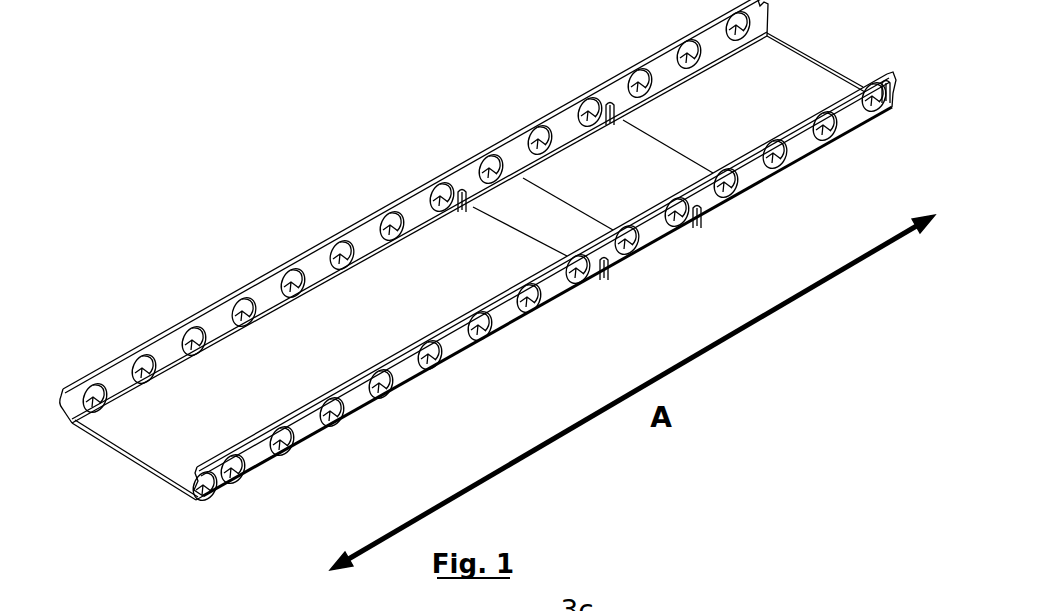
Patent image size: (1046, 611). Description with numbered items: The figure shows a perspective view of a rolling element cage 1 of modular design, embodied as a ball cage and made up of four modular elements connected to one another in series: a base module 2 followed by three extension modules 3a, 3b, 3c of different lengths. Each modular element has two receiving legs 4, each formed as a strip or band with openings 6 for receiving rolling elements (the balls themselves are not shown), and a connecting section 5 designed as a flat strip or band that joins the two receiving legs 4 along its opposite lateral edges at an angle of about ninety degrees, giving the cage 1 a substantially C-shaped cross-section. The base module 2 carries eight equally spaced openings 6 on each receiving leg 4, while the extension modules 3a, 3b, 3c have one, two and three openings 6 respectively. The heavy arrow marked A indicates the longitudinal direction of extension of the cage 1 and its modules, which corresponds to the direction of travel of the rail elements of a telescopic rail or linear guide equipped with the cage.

The rolling element cage 1 is at (480, 286).
The base module 2 is at (429, 388).
The extension module 3a is at (636, 272).
The extension module 3b is at (709, 225).
The extension module 3c is at (841, 161).
The receiving leg 4 is at (478, 286).
The connecting section 5 is at (323, 332).
The openings 6 is at (387, 400).